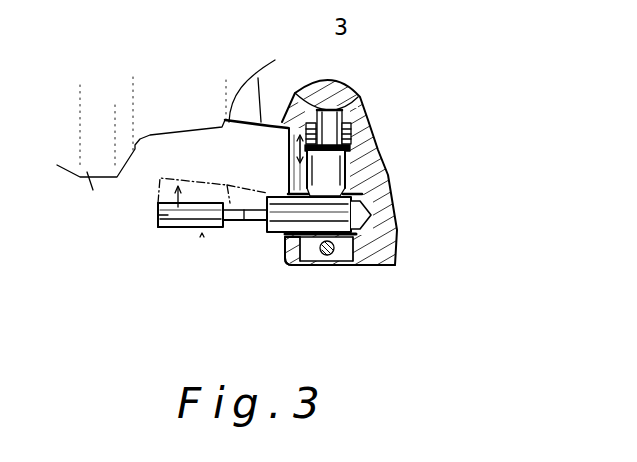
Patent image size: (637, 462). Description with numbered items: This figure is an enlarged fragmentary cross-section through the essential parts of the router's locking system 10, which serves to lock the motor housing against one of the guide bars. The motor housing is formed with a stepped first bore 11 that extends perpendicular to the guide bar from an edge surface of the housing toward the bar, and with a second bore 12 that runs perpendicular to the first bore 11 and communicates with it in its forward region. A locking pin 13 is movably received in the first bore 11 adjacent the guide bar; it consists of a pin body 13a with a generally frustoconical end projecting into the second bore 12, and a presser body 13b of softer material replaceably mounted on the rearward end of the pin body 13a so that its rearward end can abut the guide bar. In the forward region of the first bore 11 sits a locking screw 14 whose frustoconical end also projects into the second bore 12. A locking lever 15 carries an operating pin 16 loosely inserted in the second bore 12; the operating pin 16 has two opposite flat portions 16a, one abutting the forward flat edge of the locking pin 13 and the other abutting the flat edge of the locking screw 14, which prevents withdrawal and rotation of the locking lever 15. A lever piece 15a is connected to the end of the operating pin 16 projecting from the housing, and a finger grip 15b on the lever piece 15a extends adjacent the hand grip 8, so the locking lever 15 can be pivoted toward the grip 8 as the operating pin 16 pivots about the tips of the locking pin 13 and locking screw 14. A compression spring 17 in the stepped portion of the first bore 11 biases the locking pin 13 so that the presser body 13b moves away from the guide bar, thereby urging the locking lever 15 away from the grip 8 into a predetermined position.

The hand grip 8 is at (88, 185).
The locking system 10 is at (200, 240).
The first bore 11 is at (350, 186).
The second bore 12 is at (274, 238).
The locking pin 13 is at (352, 152).
The pin body 13a is at (353, 167).
The presser body 13b is at (350, 118).
The locking screw 14 is at (330, 258).
The locking lever 15 is at (183, 228).
The lever piece 15a is at (244, 235).
The finger grip 15b is at (158, 218).
The operating pin 16 is at (312, 265).
The flat portion 16a is at (347, 217).
The compression spring 17 is at (352, 137).